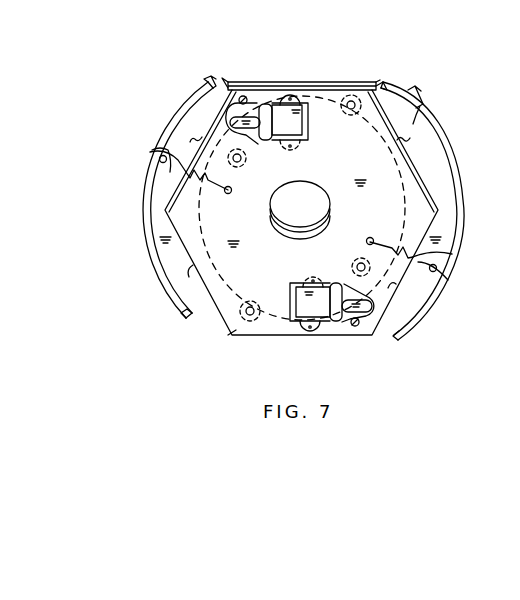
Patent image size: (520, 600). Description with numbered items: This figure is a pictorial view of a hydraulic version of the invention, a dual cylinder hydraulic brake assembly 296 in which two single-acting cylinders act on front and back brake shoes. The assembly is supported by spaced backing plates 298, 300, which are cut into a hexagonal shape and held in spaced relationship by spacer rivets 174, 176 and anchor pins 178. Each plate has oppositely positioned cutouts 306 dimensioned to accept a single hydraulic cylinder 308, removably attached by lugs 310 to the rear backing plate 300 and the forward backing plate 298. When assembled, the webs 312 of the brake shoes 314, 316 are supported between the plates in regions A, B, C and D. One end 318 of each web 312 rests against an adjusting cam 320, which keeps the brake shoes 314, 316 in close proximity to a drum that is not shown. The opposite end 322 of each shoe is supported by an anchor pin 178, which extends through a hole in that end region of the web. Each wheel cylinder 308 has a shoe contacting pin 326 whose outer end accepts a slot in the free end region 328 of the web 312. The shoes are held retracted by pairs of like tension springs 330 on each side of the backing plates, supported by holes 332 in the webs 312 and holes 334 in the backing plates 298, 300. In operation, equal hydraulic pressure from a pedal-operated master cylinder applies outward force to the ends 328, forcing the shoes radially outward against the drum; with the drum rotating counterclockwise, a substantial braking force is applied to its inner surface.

The dual cylinder hydraulic brake assembly 296 is at (308, 48).
The forward backing plate 298 is at (250, 82).
The rear backing plate 300 is at (383, 82).
The cutout 306 is at (236, 108).
The hydraulic cylinder 308 is at (300, 112).
The lug 310 is at (289, 98).
The web 312 is at (158, 150).
The brake shoe 314 is at (146, 224).
The brake shoe 316 is at (462, 204).
The end of web 318 is at (219, 79).
The adjusting cam 320 is at (240, 99).
The opposite end of shoe 322 is at (369, 84).
The shoe contacting pin 326 is at (262, 144).
The free end region of web 328 is at (262, 150).
The tension spring 330 is at (154, 187).
The hole in web 332 is at (158, 163).
The hole in backing plate 334 is at (230, 193).
The spacer rivet 174 is at (231, 162).
The spacer rivet 176 is at (362, 262).
The anchor pin 178 is at (352, 113).